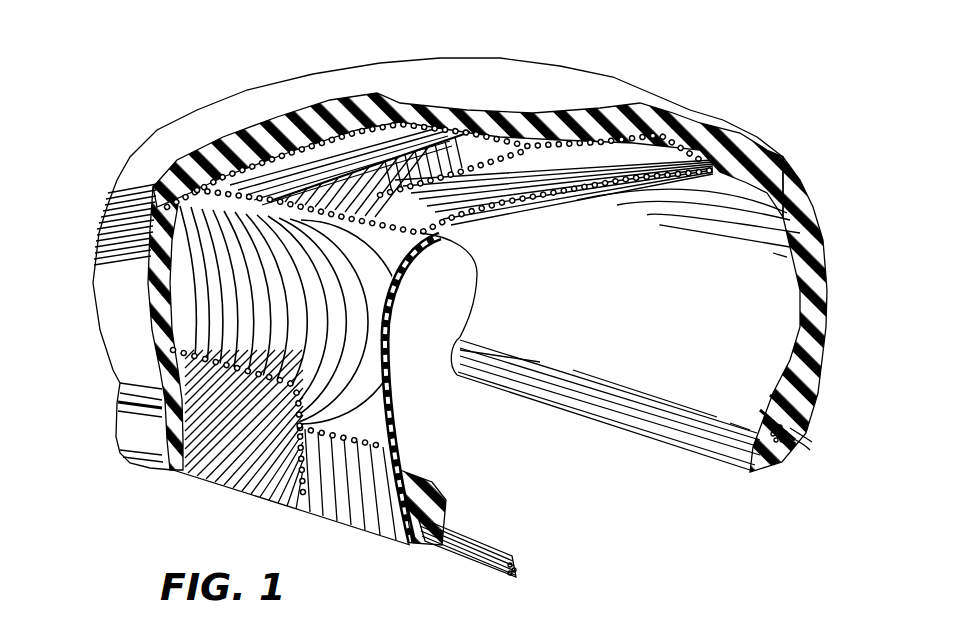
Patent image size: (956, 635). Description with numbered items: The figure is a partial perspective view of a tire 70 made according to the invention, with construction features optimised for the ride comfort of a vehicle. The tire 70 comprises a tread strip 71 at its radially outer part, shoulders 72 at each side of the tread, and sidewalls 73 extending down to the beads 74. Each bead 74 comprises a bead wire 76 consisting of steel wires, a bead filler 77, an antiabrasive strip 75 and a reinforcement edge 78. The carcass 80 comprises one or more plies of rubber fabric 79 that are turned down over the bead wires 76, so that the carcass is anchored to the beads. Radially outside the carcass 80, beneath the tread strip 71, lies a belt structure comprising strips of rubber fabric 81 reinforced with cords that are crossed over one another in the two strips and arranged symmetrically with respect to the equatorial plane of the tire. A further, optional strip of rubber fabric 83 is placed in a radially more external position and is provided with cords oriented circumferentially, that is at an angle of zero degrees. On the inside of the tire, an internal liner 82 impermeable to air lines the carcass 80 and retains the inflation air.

The tire 70 is at (647, 80).
The tread strip 71 is at (538, 90).
The shoulders 72 is at (780, 162).
The sidewalls 73 is at (97, 323).
The beads 74 is at (458, 503).
The antiabrasive strip 75 is at (807, 433).
The bead wires 76 is at (517, 553).
The bead fillers 77 is at (430, 487).
The reinforcement edges 78 is at (231, 453).
The plies of rubber fabric 79 is at (392, 393).
The carcass 80 is at (392, 323).
The strips of rubber fabric 81 is at (462, 148).
The internal liner 82 is at (654, 283).
The strip of rubber fabric 83 is at (300, 183).